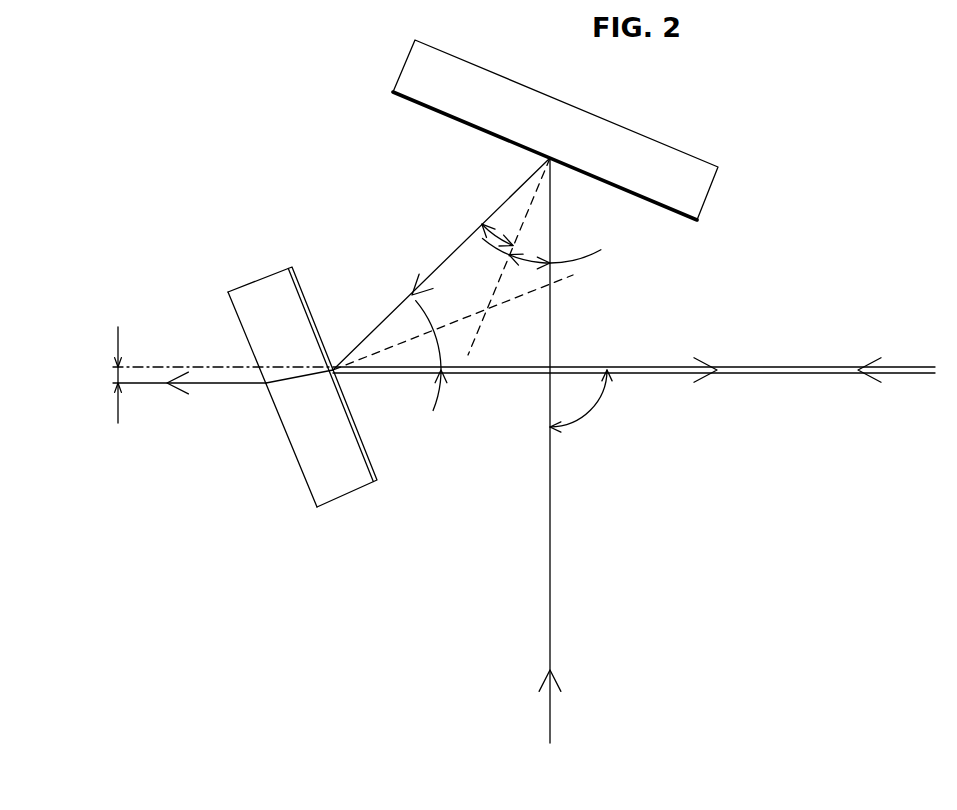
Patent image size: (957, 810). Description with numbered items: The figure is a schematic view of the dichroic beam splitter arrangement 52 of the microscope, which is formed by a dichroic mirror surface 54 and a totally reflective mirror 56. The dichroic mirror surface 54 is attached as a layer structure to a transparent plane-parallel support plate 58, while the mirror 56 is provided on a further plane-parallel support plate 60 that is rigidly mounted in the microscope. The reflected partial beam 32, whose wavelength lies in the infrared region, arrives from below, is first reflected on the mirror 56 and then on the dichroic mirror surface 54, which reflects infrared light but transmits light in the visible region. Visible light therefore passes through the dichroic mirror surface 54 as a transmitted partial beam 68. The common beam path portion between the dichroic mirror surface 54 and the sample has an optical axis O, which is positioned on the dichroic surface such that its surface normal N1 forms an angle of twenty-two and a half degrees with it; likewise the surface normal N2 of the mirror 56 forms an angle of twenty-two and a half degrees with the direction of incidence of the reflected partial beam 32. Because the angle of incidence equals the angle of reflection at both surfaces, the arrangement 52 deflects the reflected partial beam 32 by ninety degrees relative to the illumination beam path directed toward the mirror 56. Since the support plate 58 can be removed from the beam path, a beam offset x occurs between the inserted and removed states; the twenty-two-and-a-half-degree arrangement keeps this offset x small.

The reflected partial beam 32 is at (549, 606).
The dichroic beam splitter arrangement 52 is at (288, 151).
The dichroic mirror surface 54 is at (375, 457).
The mirror 56 is at (455, 116).
The transparent plane-parallel support plate 58 is at (322, 483).
The plane-parallel support plate 60 is at (657, 186).
The transmitted partial beam 68 is at (905, 367).
The optical axis O is at (780, 367).
The surface normal of the dichroic mirror surface N1 is at (532, 296).
The surface normal of the second mirror surface N2 is at (480, 329).
The beam offset x is at (113, 372).